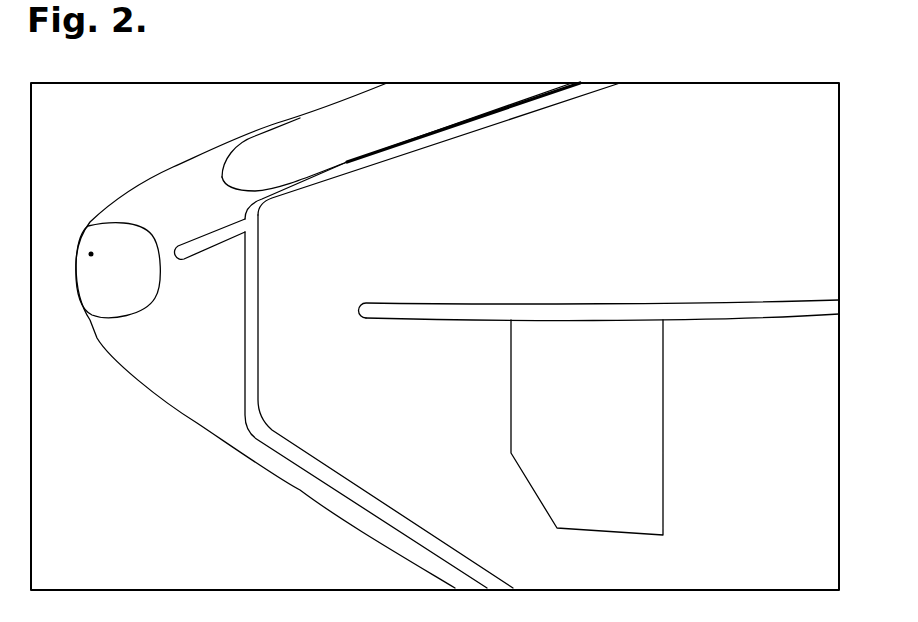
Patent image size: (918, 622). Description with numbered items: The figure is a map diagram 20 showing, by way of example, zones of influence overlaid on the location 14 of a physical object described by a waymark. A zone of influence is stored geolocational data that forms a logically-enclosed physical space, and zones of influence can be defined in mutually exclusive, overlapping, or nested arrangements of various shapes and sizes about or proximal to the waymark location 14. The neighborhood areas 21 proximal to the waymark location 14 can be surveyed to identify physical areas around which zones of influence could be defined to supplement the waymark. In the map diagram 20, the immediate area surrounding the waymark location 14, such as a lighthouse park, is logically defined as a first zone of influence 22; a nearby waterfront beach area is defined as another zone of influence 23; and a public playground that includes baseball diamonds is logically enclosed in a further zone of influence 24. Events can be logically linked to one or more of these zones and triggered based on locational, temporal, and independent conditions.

The waymark location 14 is at (81, 237).
The map diagram 20 is at (204, 63).
The neighborhood areas 21 is at (748, 83).
The first zone of influence 22 is at (161, 274).
The zone of influence 23 is at (222, 177).
The further zone of influence 24 is at (511, 413).